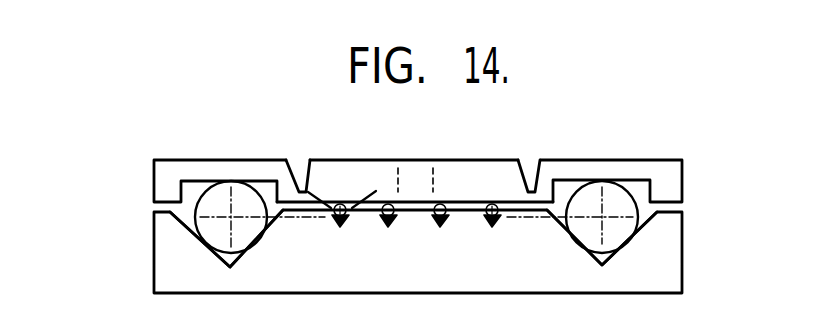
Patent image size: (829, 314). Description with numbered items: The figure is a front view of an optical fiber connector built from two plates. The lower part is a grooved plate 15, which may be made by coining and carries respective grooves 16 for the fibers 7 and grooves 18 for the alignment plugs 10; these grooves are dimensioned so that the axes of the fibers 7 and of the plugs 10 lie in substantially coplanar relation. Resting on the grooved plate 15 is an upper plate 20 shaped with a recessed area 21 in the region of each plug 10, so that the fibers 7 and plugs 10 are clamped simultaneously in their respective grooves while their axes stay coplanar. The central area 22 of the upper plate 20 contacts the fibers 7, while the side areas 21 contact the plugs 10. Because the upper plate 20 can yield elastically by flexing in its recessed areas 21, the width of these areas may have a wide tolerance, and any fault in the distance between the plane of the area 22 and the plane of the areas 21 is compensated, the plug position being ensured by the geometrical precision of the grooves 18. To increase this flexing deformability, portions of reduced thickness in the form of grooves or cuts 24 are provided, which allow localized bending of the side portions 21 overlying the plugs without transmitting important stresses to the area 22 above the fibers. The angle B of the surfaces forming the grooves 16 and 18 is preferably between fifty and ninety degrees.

The upper plate 20 is at (388, 159).
The recessed area 21 is at (205, 168).
The grooves, cuts or the like 24 is at (308, 190).
The area in contact with the fibers 22 is at (453, 192).
The alignment plug 10 is at (213, 205).
The groove for alignment plug 18 is at (180, 220).
The grooved plate 15 is at (381, 251).
The groove for fiber 16 is at (331, 211).
The fiber 7 is at (378, 217).
The angle of the groove surfaces B is at (374, 191).